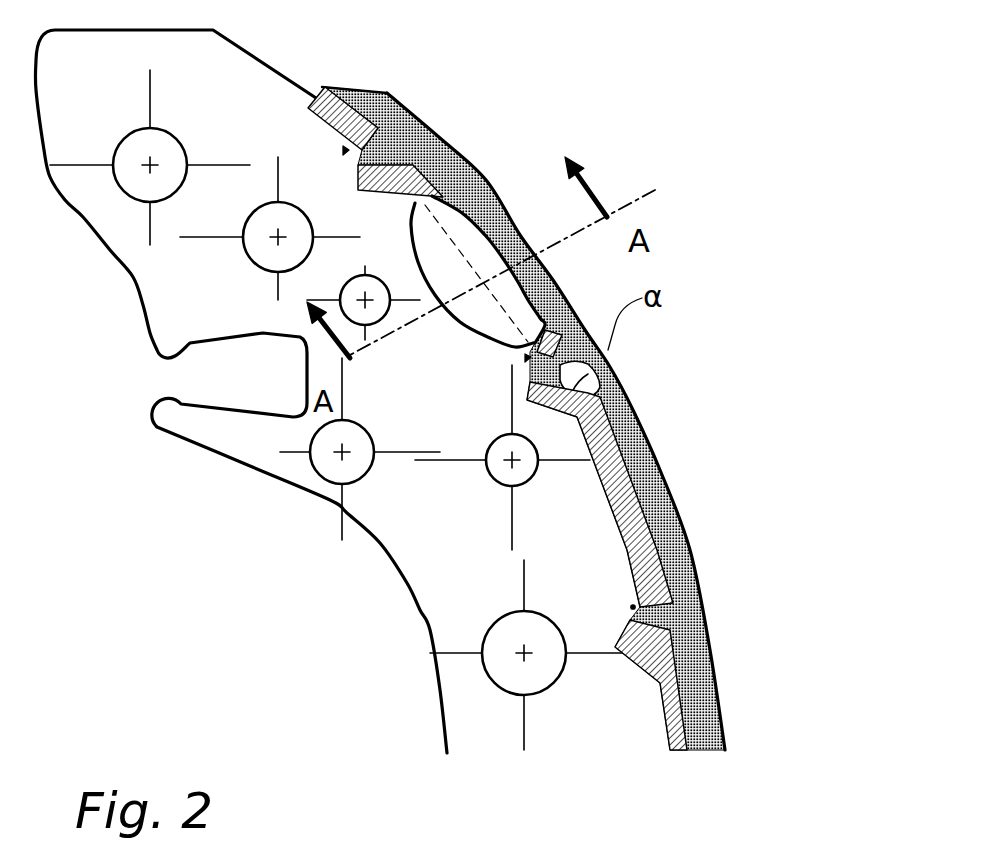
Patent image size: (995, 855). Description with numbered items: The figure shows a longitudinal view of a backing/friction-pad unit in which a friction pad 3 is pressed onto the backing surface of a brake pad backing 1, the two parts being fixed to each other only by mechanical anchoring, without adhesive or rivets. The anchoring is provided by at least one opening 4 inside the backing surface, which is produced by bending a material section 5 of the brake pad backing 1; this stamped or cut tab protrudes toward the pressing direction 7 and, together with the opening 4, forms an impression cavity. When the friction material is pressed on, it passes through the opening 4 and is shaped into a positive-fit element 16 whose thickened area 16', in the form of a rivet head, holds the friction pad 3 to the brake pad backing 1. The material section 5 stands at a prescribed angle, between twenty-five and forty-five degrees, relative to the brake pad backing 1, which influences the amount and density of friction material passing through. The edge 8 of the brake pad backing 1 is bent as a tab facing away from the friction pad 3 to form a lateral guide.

The brake pad backing 1 is at (643, 410).
The friction pad 3 is at (462, 158).
The opening 4 is at (405, 112).
The material section 5 is at (373, 190).
The pressing direction 7 is at (677, 337).
The edge 8 is at (475, 317).
The positive-fit element 16 is at (462, 376).
The thickened area 16' is at (466, 397).